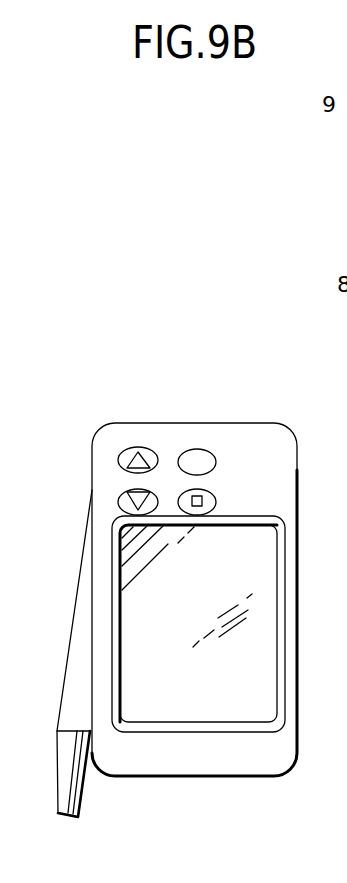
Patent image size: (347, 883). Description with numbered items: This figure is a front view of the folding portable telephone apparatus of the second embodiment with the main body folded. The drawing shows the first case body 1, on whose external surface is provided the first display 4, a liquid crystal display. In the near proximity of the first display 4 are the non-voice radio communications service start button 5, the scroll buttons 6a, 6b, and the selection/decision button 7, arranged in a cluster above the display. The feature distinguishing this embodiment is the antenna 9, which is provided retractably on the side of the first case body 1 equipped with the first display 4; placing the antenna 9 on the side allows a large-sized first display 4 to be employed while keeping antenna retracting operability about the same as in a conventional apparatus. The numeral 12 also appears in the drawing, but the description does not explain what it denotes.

The first case body 1 is at (287, 730).
The first display 4 is at (228, 585).
The non-voice radio communications service start button 5 is at (205, 455).
The scroll button 6a is at (148, 447).
The scroll button 6b is at (121, 498).
The selection/decision button 7 is at (214, 497).
The antenna 9 is at (64, 776).
The display frame 12 is at (229, 624).